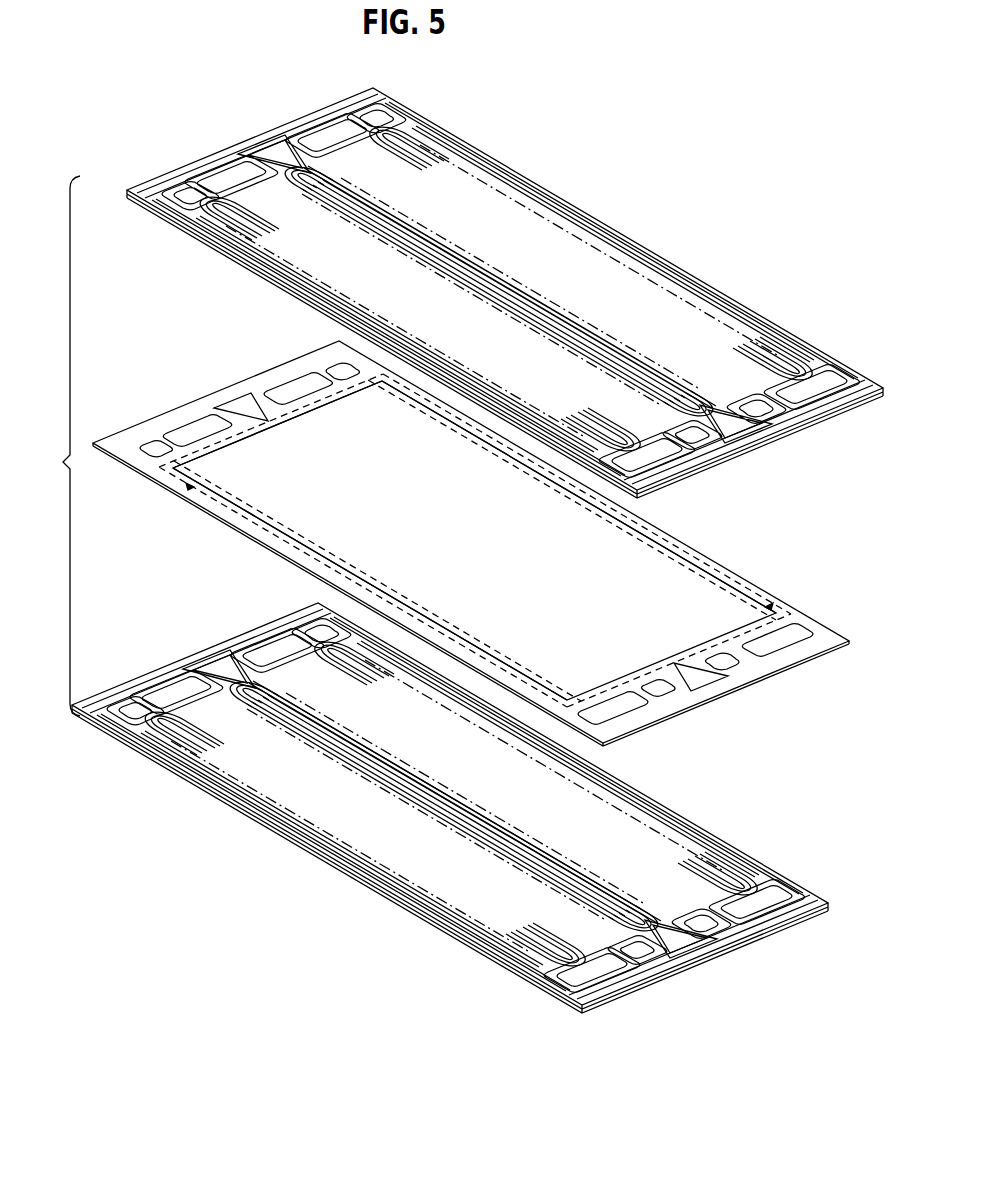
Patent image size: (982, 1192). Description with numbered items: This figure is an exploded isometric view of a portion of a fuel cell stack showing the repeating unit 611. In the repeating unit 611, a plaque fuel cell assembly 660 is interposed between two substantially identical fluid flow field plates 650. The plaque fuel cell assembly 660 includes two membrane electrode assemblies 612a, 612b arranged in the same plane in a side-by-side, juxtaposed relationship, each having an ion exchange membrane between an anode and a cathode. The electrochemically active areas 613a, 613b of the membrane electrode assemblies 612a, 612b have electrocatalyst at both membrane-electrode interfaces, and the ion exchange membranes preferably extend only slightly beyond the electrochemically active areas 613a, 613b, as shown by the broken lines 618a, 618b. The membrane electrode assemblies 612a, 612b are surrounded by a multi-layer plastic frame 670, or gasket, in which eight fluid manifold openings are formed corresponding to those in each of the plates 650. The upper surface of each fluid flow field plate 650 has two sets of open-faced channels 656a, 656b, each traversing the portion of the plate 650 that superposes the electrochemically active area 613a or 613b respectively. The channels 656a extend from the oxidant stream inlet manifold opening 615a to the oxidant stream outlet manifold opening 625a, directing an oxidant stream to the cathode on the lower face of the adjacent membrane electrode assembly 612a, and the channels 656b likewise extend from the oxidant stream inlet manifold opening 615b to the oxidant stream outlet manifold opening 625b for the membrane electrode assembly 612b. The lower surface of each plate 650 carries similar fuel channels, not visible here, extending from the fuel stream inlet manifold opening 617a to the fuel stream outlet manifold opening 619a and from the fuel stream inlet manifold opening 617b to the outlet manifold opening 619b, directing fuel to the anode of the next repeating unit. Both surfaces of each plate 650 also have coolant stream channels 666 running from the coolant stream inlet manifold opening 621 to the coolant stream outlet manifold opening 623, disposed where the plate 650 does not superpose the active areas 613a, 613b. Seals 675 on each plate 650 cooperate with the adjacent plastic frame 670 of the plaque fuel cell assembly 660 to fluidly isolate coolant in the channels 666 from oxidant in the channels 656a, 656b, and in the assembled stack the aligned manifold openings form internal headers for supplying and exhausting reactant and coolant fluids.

The repeating unit 611 is at (53, 446).
The fluid flow field plate 650 is at (476, 576).
The plastic frame 670 is at (490, 543).
The plaque fuel cell assembly 660 is at (520, 479).
The membrane electrode assembly 612a is at (147, 498).
The membrane electrode assembly 612b is at (826, 585).
The electrochemically active area 613a is at (364, 540).
The electrochemically active area 613b is at (587, 540).
The broken line 618a is at (370, 584).
The broken line 618b is at (579, 497).
The oxidant stream inlet manifold opening 615a is at (135, 757).
The oxidant stream inlet manifold opening 615b is at (264, 621).
The fuel stream inlet manifold opening 617a is at (176, 758).
The fuel stream inlet manifold opening 617b is at (220, 633).
The coolant stream inlet manifold opening 621 is at (182, 661).
The coolant stream outlet manifold opening 623 is at (712, 972).
The oxidant stream outlet manifold opening 625a is at (659, 987).
The oxidant stream outlet manifold opening 625b is at (751, 948).
The fuel stream outlet manifold opening 619a is at (592, 1006).
The oxidant stream outlet manifold opening 619b is at (777, 870).
The open-faced channels 656a is at (196, 799).
The open-faced channels 656b is at (628, 860).
The coolant stream channels 666 is at (465, 811).
The seals 675 is at (200, 696).